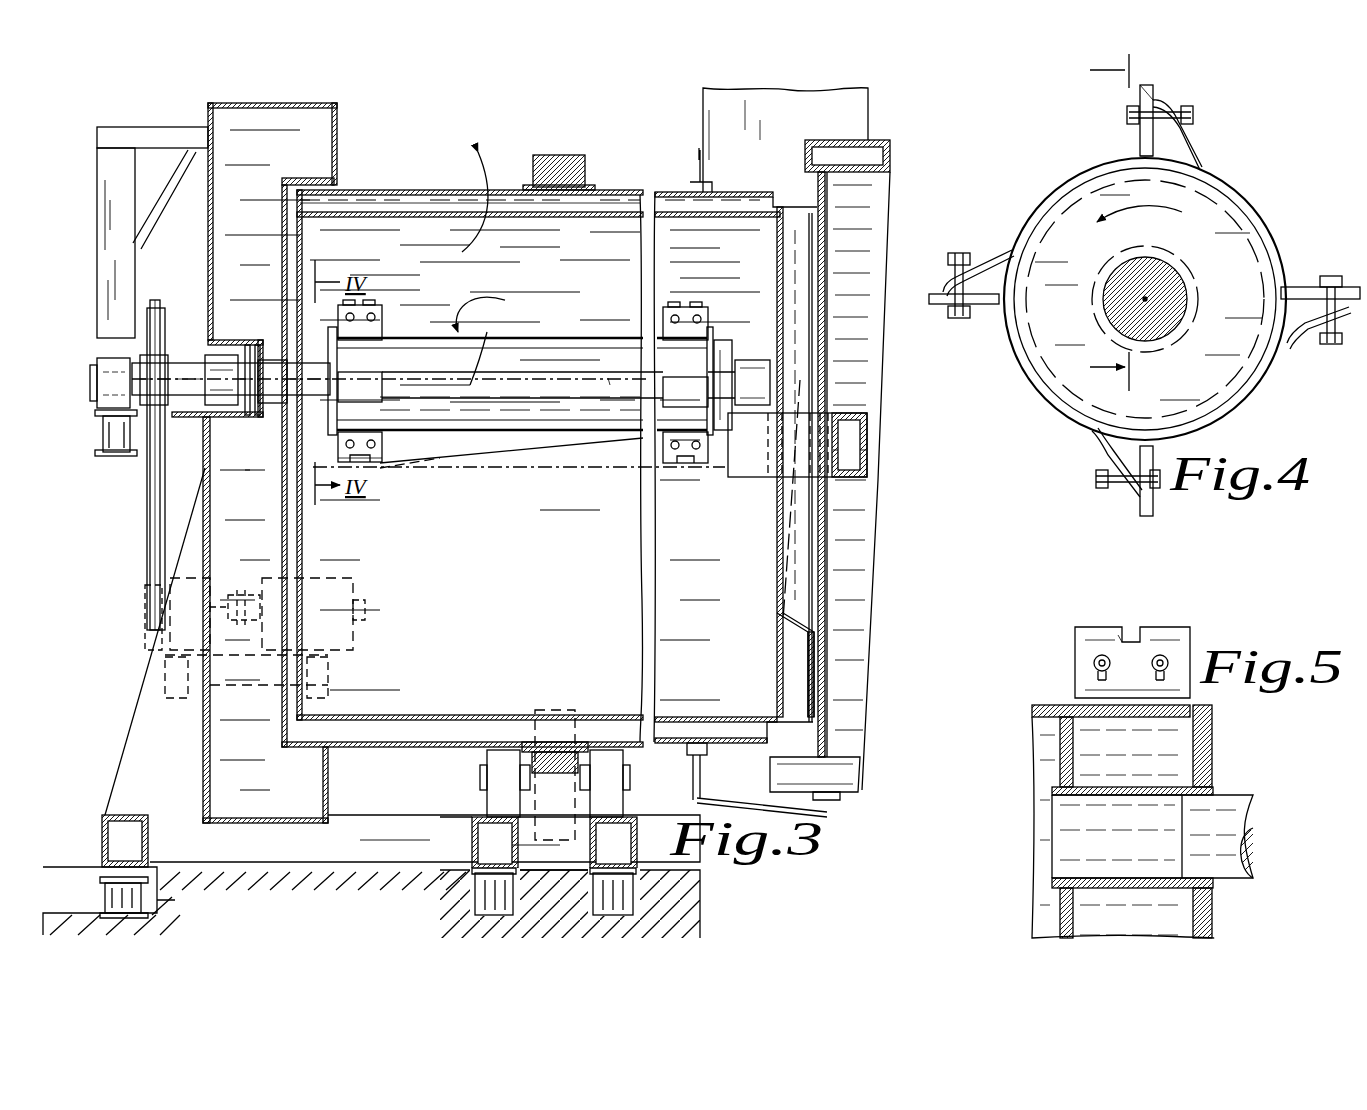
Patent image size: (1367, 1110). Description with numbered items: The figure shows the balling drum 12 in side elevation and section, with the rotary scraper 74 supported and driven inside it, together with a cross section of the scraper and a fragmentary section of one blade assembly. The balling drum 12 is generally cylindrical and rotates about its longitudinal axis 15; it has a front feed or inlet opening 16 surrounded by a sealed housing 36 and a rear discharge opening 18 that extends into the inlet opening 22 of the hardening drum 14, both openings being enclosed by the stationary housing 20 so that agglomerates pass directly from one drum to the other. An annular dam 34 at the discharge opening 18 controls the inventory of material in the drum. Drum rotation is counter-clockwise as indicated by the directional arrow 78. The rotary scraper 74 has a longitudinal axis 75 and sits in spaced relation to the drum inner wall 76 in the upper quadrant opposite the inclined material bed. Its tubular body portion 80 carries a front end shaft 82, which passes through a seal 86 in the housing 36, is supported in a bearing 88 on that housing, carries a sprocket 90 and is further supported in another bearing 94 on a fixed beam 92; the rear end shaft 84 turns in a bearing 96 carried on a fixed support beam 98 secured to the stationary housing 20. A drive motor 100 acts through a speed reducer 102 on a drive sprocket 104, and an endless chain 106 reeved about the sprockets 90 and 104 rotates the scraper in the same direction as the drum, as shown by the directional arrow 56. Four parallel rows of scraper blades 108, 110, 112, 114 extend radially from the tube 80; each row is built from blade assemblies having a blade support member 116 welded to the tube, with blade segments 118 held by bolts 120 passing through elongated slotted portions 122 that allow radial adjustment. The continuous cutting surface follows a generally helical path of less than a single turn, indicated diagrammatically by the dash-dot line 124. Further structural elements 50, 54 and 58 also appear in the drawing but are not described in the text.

In FIG. 3, the balling drum 12 is at (380, 190).
In FIG. 3, the hardening drum 14 is at (893, 145).
In FIG. 3, the longitudinal axis 15 is at (470, 485).
In FIG. 3, the front feed or inlet opening 16 is at (303, 245).
In FIG. 3, the rear discharge opening 18 is at (828, 570).
In FIG. 3, the stationary housing 20 is at (845, 93).
In FIG. 3, the inlet opening 22 is at (775, 512).
In FIG. 3, the annular dam 34 is at (777, 620).
In FIG. 3, the sealed housing 36 is at (337, 118).
In FIG. 3, the mounting block 50 is at (585, 152).
In FIG. 3, the roller support 54 is at (520, 796).
In FIG. 3, the directional arrow 56 is at (494, 336).
In FIG. 3, the base plate 58 is at (380, 815).
In FIG. 3, the rotary scraper 74 is at (600, 330).
In FIG. 4, the rotary scraper 74 is at (1265, 202).
In FIG. 3, the longitudinal axis 75 is at (608, 378).
In FIG. 4, the longitudinal axis 75 is at (1163, 292).
In FIG. 3, the drum inner wall 76 is at (518, 215).
In FIG. 3, the directional arrow 78 is at (480, 148).
In FIG. 3, the tubular body portion 80 is at (560, 388).
In FIG. 4, the tubular body portion 80 is at (1036, 396).
In FIG. 5, the tubular body portion 80 is at (1032, 716).
In FIG. 3, the front end shaft 82 is at (192, 365).
In FIG. 4, the front end shaft 82 is at (1160, 333).
In FIG. 5, the front end shaft 82 is at (1235, 832).
In FIG. 3, the rear end shaft 84 is at (727, 355).
In FIG. 3, the seal 86 is at (262, 410).
In FIG. 3, the bearing 88 is at (230, 355).
In FIG. 3, the sprocket 90 is at (180, 285).
In FIG. 3, the fixed beam 92 is at (120, 450).
In FIG. 3, the bearing 94 is at (105, 360).
In FIG. 3, the bearing 96 is at (768, 370).
In FIG. 3, the fixed support beam 98 is at (860, 413).
In FIG. 3, the drive motor 100 is at (345, 580).
In FIG. 3, the speed reducer 102 is at (228, 590).
In FIG. 3, the drive sprocket 104 is at (148, 627).
In FIG. 3, the endless chain 106 is at (150, 524).
In FIG. 3, the row of scraper blades 108 is at (383, 305).
In FIG. 4, the row of scraper blades 108 is at (1120, 127).
In FIG. 5, the row of scraper blades 108 is at (1190, 627).
In FIG. 3, the row of scraper blades 110 is at (700, 307).
In FIG. 4, the row of scraper blades 110 is at (995, 318).
In FIG. 3, the row of scraper blades 112 is at (383, 458).
In FIG. 4, the row of scraper blades 112 is at (1165, 460).
In FIG. 3, the row of scraper blades 114 is at (385, 386).
In FIG. 4, the row of scraper blades 114 is at (1323, 284).
In FIG. 4, the blade support member 116 is at (1140, 159).
In FIG. 5, the blade support member 116 is at (1130, 705).
In FIG. 4, the blade segment 118 is at (1153, 100).
In FIG. 5, the blade segment 118 is at (1102, 635).
In FIG. 4, the bolt 120 is at (1193, 120).
In FIG. 5, the bolt 120 is at (1092, 663).
In FIG. 5, the elongated slotted portion 122 is at (1098, 680).
In FIG. 3, the helical path line 124 is at (528, 460).